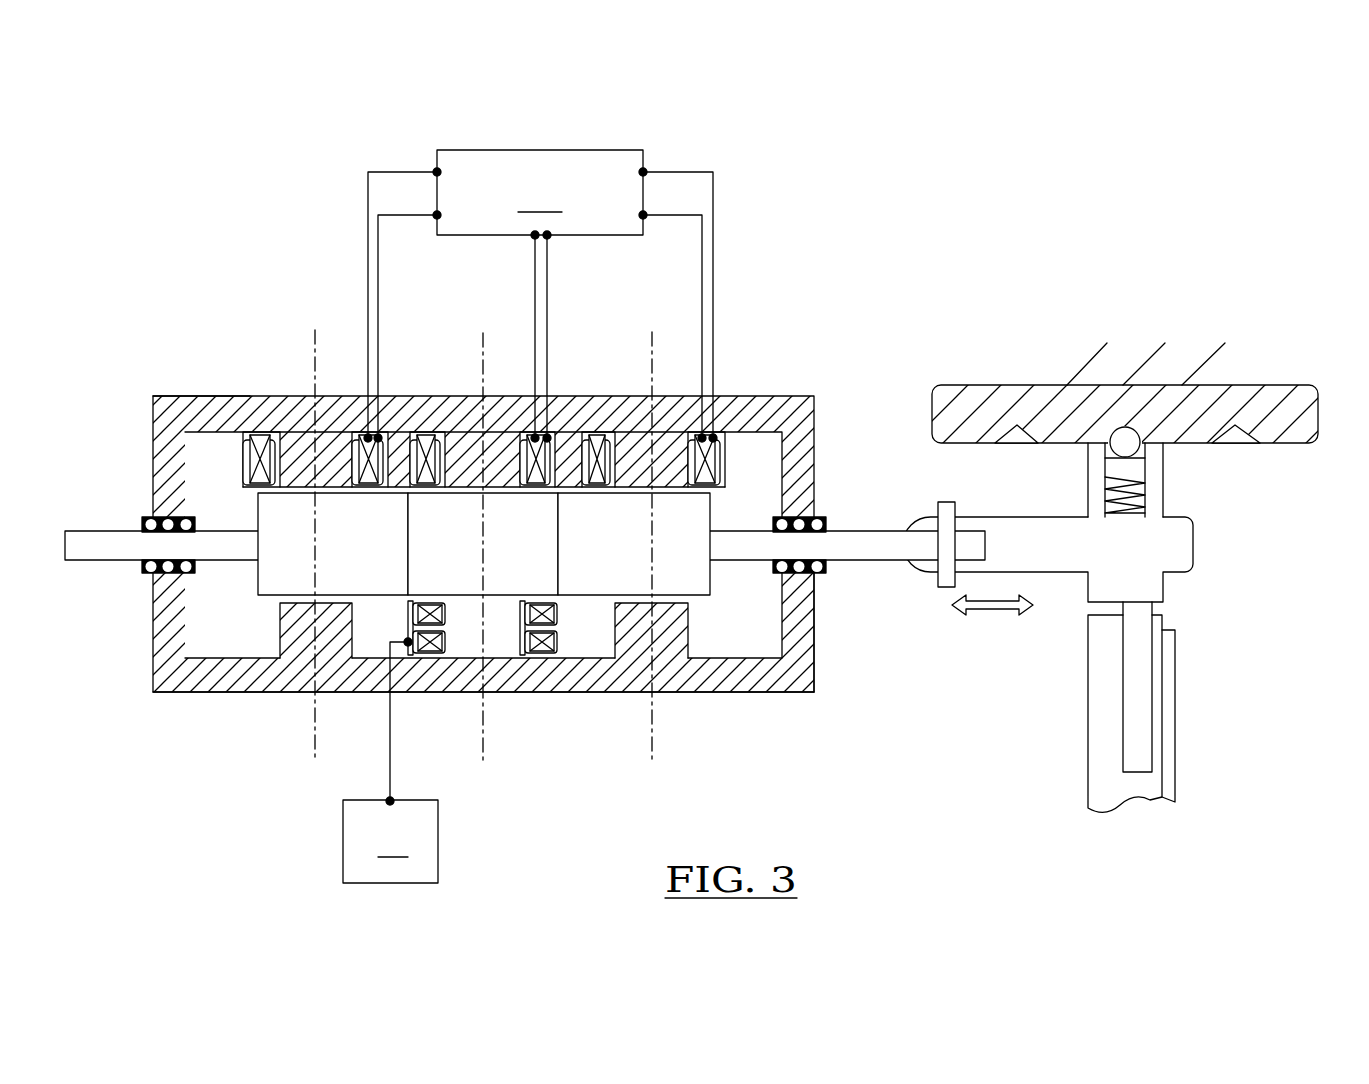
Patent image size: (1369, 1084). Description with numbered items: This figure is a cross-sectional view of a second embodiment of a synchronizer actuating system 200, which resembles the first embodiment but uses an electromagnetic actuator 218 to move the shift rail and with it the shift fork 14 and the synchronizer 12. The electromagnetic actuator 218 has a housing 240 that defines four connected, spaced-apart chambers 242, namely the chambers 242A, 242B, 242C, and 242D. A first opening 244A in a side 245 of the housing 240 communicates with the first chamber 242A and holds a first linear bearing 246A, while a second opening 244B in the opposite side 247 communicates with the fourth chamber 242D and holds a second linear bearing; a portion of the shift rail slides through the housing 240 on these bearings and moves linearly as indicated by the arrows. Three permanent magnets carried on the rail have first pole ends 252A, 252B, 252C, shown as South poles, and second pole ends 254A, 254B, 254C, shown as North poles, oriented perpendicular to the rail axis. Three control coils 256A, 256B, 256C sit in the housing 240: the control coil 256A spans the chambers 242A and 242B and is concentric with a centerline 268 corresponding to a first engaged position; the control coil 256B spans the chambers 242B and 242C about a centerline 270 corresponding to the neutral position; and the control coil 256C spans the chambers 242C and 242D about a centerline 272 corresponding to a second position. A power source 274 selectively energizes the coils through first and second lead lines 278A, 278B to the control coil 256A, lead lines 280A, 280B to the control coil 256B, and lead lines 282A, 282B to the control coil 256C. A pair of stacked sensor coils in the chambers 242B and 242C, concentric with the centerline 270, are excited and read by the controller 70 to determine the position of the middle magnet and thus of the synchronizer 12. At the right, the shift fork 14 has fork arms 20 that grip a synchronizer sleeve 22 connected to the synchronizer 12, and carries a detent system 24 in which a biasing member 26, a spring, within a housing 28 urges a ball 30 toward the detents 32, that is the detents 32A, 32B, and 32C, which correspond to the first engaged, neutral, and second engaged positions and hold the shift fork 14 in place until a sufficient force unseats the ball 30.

The synchronizer 12 is at (1183, 628).
The shift fork 14 is at (1203, 541).
The fork arms 20 is at (1135, 758).
The synchronizer sleeve 22 is at (1157, 652).
The detent system 24 is at (935, 537).
The biasing member 26 is at (1138, 493).
The housing 28 is at (1163, 460).
The ball 30 is at (1127, 435).
The detents 32 is at (1323, 413).
The detent 32A is at (1010, 445).
The detent 32B is at (1127, 437).
The detent 32C is at (1230, 443).
The controller 70 is at (390, 760).
The synchronizer actuating system 200 is at (1038, 172).
The electromagnetic actuator 218 is at (820, 359).
The housing 240 is at (818, 410).
The chambers 242 is at (560, 637).
The first chamber 242A is at (758, 643).
The second chamber 242B is at (573, 663).
The third chamber 242C is at (363, 620).
The fourth chamber 242D is at (218, 627).
The first opening 244A is at (827, 518).
The second opening 244B is at (142, 519).
The side of housing 245 is at (817, 660).
The first linear bearing 246A is at (826, 563).
The side of housing 247 is at (152, 410).
The first pole end 252A is at (697, 577).
The first pole end 252B is at (547, 580).
The first pole end 252C is at (377, 578).
The second pole end 254A is at (700, 507).
The second pole end 254B is at (585, 478).
The second pole end 254C is at (393, 505).
The control coil 256A is at (613, 457).
The control coil 256B is at (427, 440).
The control coil 256C is at (257, 442).
The centerline 268 is at (652, 332).
The centerline 270 is at (483, 333).
The centerline 272 is at (315, 330).
The power source 274 is at (540, 192).
The first lead line 278A is at (676, 208).
The second lead line 278B is at (715, 200).
The first lead line 280A is at (535, 284).
The second lead line 280B is at (548, 337).
The first lead line 282A is at (388, 172).
The second lead line 282B is at (378, 243).